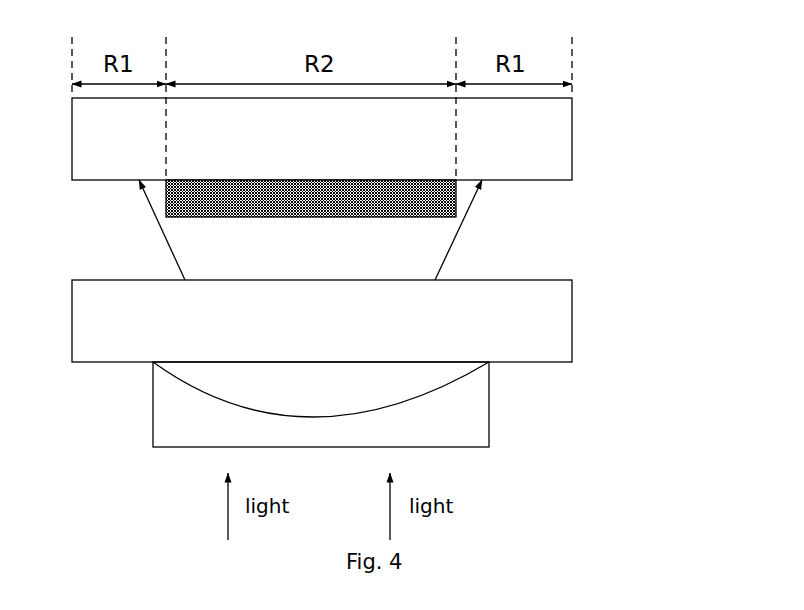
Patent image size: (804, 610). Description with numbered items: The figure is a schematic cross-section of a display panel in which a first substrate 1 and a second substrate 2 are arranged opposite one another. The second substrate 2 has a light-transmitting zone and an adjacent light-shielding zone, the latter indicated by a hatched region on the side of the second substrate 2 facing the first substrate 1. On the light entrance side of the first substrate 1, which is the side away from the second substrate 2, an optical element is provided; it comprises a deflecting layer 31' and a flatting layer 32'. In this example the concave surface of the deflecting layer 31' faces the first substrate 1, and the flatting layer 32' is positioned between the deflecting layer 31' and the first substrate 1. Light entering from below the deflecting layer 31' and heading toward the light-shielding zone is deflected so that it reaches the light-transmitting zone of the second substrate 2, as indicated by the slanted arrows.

The first substrate 1 is at (550, 315).
The second substrate 2 is at (550, 138).
The deflecting layer 31' is at (362, 435).
The flatting layer 32' is at (362, 393).